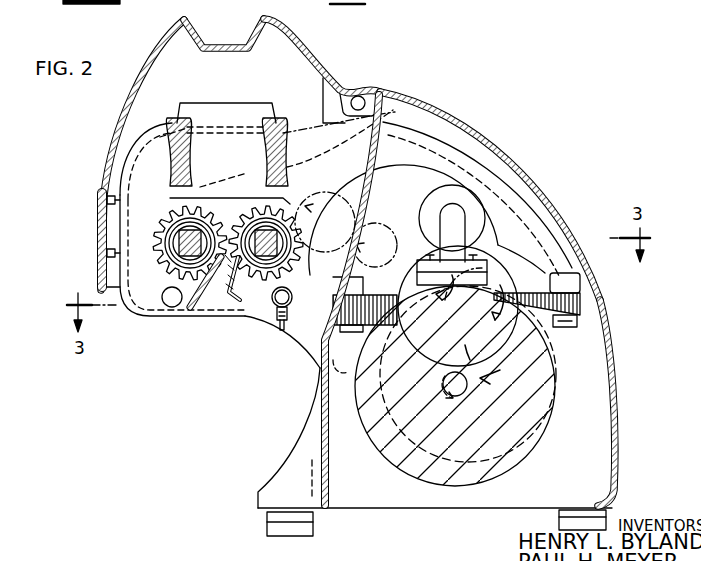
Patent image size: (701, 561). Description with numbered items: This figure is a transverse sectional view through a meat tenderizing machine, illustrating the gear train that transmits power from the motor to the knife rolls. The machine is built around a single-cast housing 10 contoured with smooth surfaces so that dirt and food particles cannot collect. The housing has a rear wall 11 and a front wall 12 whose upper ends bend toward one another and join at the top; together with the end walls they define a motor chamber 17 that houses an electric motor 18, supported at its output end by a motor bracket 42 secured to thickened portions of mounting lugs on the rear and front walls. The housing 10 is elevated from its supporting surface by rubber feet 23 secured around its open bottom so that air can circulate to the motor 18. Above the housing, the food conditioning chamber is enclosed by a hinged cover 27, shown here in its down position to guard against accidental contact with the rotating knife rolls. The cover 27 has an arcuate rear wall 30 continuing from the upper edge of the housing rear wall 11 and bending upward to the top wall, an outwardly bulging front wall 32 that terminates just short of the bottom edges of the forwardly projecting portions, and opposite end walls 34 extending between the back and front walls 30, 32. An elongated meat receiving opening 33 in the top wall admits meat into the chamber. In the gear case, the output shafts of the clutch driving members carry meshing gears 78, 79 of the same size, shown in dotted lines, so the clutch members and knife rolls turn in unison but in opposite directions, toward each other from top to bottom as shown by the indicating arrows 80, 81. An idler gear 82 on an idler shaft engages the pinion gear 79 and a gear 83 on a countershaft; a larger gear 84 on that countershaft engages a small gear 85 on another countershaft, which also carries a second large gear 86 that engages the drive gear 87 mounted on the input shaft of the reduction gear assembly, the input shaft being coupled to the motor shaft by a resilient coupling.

The housing 10 is at (460, 108).
The rear wall 11 is at (614, 365).
The front wall 12 is at (323, 369).
The motor chamber 17 is at (588, 423).
The electric motor 18 is at (440, 483).
The rubber feet 23 is at (297, 530).
The cover 27 is at (108, 128).
The arcuate rear wall 30 is at (300, 53).
The front wall 32 is at (120, 100).
The meat receiving opening 33 is at (228, 38).
The end walls 34 is at (185, 62).
The motor bracket 42 is at (548, 317).
The meshing gear 78 is at (202, 187).
The pinion gear 79 is at (251, 187).
The indicating arrow 80 is at (178, 300).
The indicating arrow 81 is at (244, 296).
The idler gear 82 is at (318, 187).
The gear 83 is at (384, 222).
The larger gear 84 is at (421, 157).
The small gear 85 is at (486, 291).
The second large gear 86 is at (507, 240).
The drive gear 87 is at (470, 398).